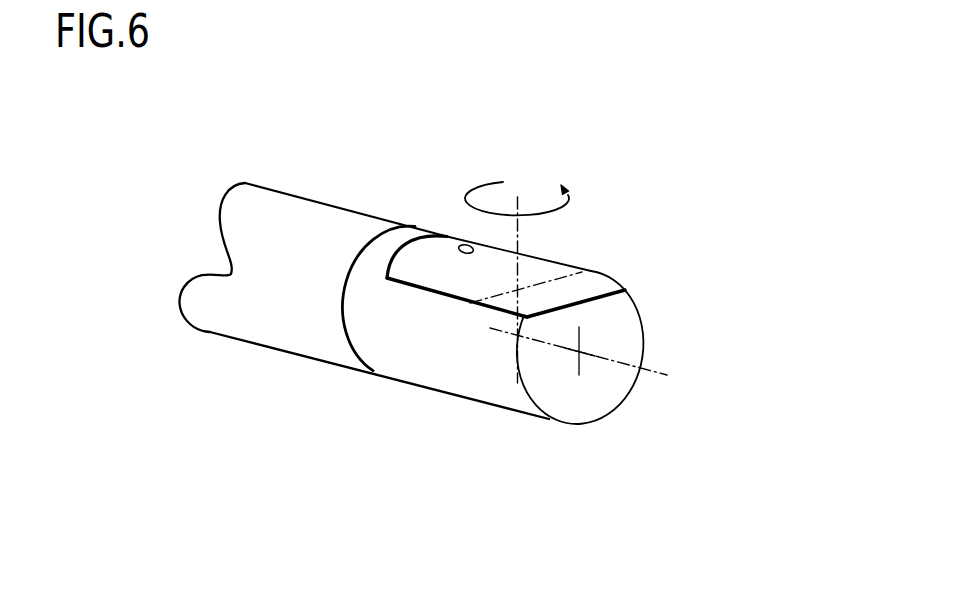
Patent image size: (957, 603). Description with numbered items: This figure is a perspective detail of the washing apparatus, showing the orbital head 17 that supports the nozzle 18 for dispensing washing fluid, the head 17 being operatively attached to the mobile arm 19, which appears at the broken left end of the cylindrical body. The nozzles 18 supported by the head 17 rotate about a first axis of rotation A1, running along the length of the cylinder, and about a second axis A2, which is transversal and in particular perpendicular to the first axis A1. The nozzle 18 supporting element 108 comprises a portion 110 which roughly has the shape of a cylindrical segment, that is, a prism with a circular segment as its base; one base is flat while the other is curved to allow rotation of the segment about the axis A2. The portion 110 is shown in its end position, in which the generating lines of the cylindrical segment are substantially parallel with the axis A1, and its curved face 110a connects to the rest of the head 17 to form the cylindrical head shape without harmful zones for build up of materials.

The orbital head 17 is at (447, 396).
The nozzle 18 is at (459, 246).
The mobile arm 19 is at (270, 318).
The nozzle supporting element 108 is at (462, 284).
The portion 110 is at (540, 264).
The curved face 110a is at (415, 273).
The first axis of rotation A1 is at (653, 369).
The second axis A2 is at (522, 203).